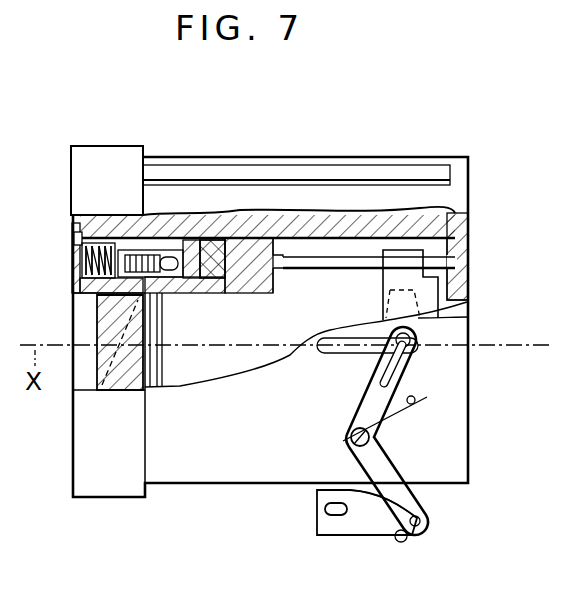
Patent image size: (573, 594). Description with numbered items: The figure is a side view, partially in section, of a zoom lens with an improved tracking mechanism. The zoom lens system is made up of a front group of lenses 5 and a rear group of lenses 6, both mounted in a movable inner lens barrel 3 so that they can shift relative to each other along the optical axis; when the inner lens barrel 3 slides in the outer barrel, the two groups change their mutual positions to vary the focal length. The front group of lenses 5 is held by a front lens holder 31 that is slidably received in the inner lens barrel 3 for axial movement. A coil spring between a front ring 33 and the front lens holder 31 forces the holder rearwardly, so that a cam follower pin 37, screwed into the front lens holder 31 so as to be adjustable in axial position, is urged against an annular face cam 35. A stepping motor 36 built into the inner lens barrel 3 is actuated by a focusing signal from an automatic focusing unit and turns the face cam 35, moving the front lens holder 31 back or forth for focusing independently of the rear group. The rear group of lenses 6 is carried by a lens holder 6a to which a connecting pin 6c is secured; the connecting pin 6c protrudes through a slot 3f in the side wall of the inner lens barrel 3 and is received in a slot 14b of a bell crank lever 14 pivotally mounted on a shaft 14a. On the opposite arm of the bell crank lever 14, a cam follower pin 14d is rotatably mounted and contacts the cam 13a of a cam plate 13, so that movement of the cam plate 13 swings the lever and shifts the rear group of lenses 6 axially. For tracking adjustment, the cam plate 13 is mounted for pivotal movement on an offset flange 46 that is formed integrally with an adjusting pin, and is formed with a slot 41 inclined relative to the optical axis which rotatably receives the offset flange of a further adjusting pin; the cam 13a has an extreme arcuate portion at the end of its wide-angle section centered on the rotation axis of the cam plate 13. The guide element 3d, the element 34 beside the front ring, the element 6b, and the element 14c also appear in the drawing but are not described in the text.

The inner lens barrel 3 is at (73, 466).
The guide rod 3d is at (179, 178).
The slot 3f is at (343, 343).
The front group of lenses 5 is at (113, 387).
The rear group of lenses 6 is at (420, 285).
The lens holder 6a is at (470, 315).
The plate 6b is at (298, 271).
The connecting pin 6c is at (417, 350).
The cam plate 13 is at (317, 519).
The cam 13a is at (349, 488).
The bell crank lever 14 is at (421, 512).
The shaft 14a is at (352, 437).
The slot 14b is at (400, 375).
The spring pin 14c is at (405, 406).
The cam follower pin 14d is at (420, 525).
The front lens holder 31 is at (125, 233).
The front ring 33 is at (72, 264).
The ring 34 is at (82, 237).
The annular face cam 35 is at (199, 279).
The stepping motor 36 is at (238, 270).
The cam follower pin 37 is at (184, 279).
The slot 41 is at (338, 514).
The offset flange 46 is at (402, 541).